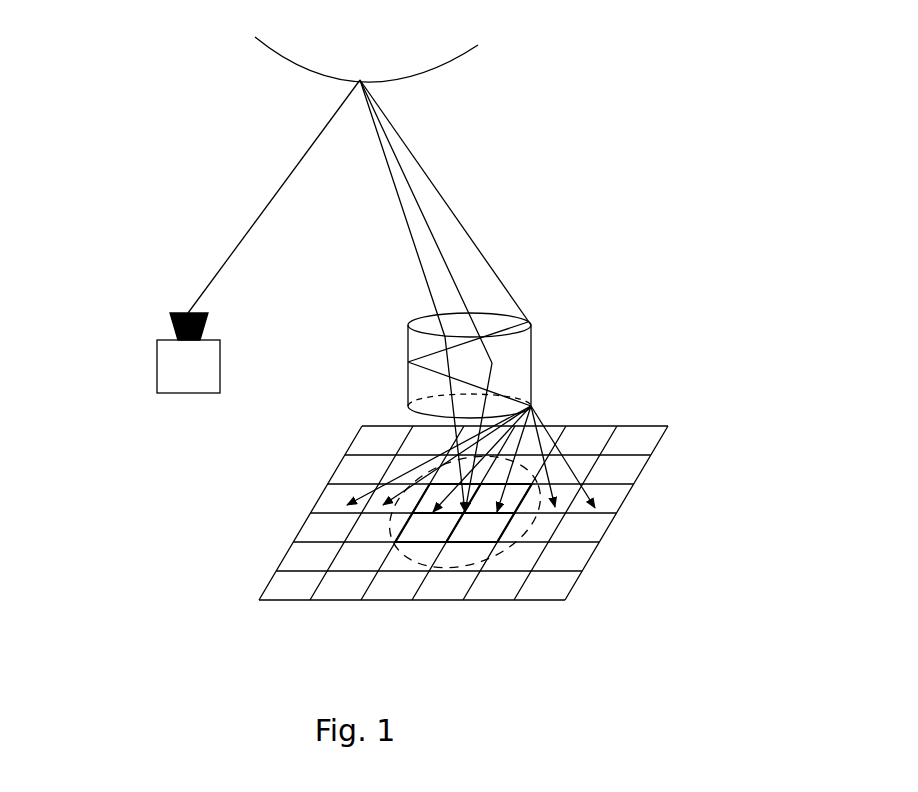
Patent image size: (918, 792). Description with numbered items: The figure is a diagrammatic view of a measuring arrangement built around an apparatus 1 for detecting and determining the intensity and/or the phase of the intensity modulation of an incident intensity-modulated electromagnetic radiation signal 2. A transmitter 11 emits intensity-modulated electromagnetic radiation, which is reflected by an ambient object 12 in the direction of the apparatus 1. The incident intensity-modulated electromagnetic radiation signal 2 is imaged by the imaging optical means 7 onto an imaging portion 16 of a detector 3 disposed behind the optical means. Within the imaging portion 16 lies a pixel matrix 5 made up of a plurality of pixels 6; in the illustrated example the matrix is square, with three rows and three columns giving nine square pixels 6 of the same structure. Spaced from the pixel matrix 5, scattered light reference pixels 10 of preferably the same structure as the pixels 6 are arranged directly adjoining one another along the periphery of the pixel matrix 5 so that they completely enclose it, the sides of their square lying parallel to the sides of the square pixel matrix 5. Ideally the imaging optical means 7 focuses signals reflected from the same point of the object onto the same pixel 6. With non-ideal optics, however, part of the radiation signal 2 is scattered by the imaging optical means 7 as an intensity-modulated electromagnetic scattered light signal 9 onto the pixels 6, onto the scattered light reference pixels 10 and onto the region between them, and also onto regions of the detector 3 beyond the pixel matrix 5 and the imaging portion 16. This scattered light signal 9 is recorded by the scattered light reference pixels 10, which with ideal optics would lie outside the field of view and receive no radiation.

The apparatus 1 is at (740, 276).
The intensity-modulated electromagnetic radiation signal 2 is at (422, 202).
The detector 3 is at (451, 543).
The pixel matrix 5 is at (459, 548).
The pixels 6 is at (490, 533).
The imaging optical means 7 is at (502, 362).
The intensity-modulated electromagnetic scattered light signal 9 is at (577, 467).
The scattered light reference pixels 10 is at (593, 533).
The transmitter 11 is at (175, 368).
The ambient object 12 is at (366, 59).
The imaging portion 16 is at (538, 528).